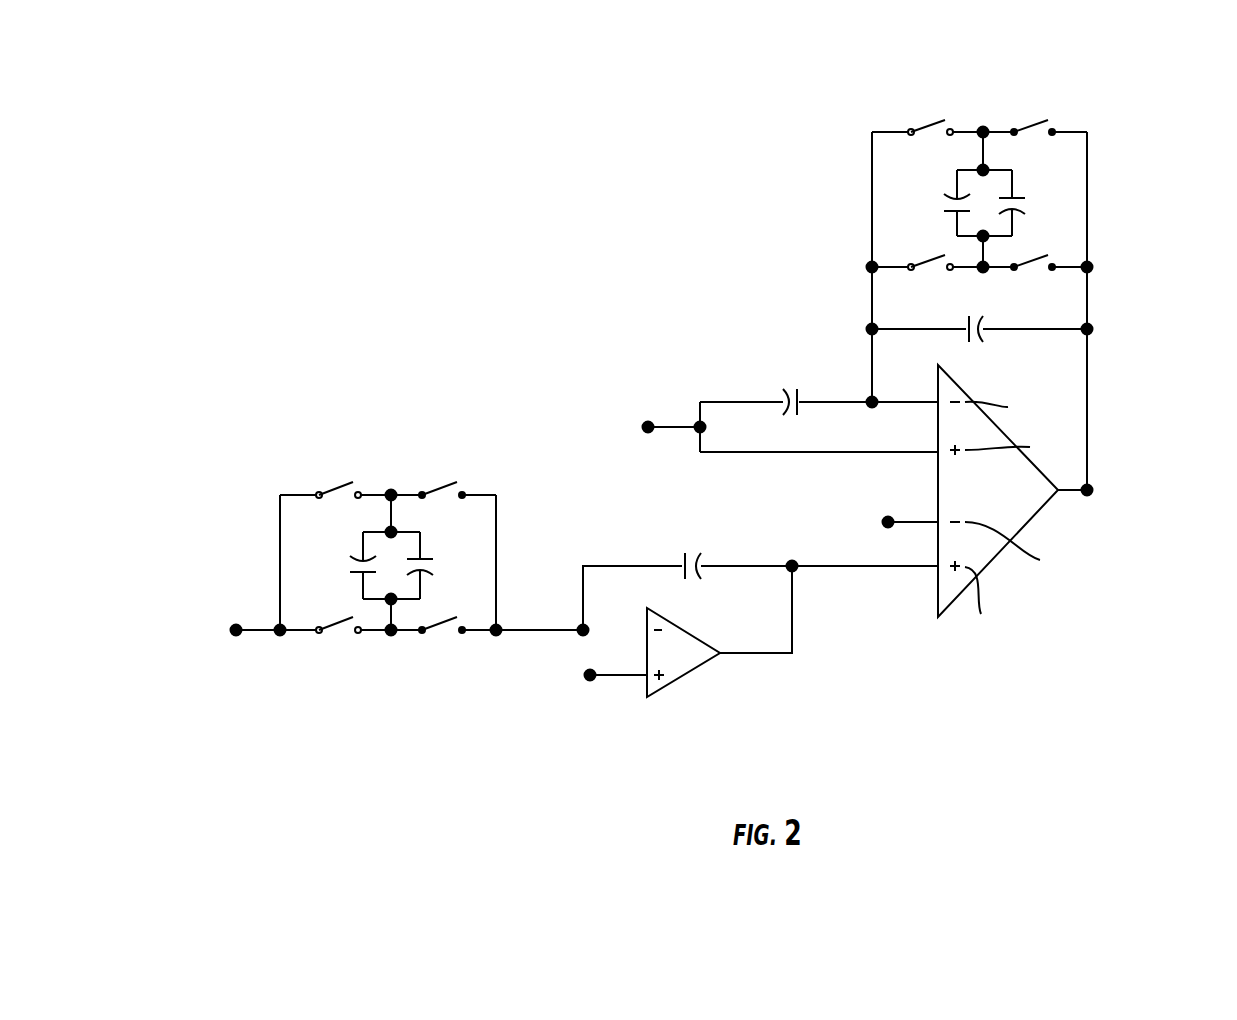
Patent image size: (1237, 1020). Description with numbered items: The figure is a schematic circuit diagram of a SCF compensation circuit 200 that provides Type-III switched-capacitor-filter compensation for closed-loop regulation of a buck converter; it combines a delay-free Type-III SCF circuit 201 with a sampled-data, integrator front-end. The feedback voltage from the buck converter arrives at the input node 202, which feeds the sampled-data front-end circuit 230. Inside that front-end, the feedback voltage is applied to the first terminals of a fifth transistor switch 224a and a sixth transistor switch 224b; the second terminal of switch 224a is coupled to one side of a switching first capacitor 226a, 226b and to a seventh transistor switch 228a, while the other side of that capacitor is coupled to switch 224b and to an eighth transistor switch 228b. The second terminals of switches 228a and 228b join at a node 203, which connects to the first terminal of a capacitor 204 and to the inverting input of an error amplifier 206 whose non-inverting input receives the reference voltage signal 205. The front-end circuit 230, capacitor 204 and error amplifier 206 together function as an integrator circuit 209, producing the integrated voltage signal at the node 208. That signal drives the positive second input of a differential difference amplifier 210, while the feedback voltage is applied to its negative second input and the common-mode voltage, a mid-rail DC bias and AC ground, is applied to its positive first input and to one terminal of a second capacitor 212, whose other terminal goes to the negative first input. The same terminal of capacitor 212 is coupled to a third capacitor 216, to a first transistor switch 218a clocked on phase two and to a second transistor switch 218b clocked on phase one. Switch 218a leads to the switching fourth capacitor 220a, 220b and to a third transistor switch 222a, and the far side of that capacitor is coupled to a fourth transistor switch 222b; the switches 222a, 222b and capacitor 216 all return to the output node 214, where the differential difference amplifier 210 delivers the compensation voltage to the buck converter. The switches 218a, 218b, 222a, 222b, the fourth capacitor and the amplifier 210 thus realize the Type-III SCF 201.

The SCF compensation circuit 200 is at (523, 258).
The Type-III SCF circuit 201 is at (725, 92).
The input node 202 is at (233, 640).
The node 203 is at (588, 635).
The capacitor C0 204 is at (695, 520).
The reference voltage signal VREF 205 is at (588, 682).
The error amplifier 206 is at (763, 730).
The node 208 is at (792, 560).
The integrator circuit 209 is at (597, 497).
The DDA 210 is at (1035, 650).
The second capacitor C2 212 is at (787, 388).
The output node 214 is at (1145, 525).
The third capacitor C3 216 is at (985, 335).
The first transistor switch 218a is at (920, 125).
The second transistor switch 218b is at (912, 265).
The fourth capacitor C4 220a is at (878, 198).
The fourth capacitor C4 220b is at (1082, 205).
The third transistor switch 222a is at (1030, 125).
The fourth transistor switch 222b is at (1035, 258).
The fifth transistor switch 224a is at (332, 485).
The sixth transistor switch 224b is at (336, 628).
The switching capacitor C1 226a is at (290, 562).
The switching capacitor C1 226b is at (497, 567).
The seventh transistor switch 228a is at (440, 490).
The eighth transistor switch 228b is at (523, 600).
The sampled-data front-end circuit 230 is at (401, 476).